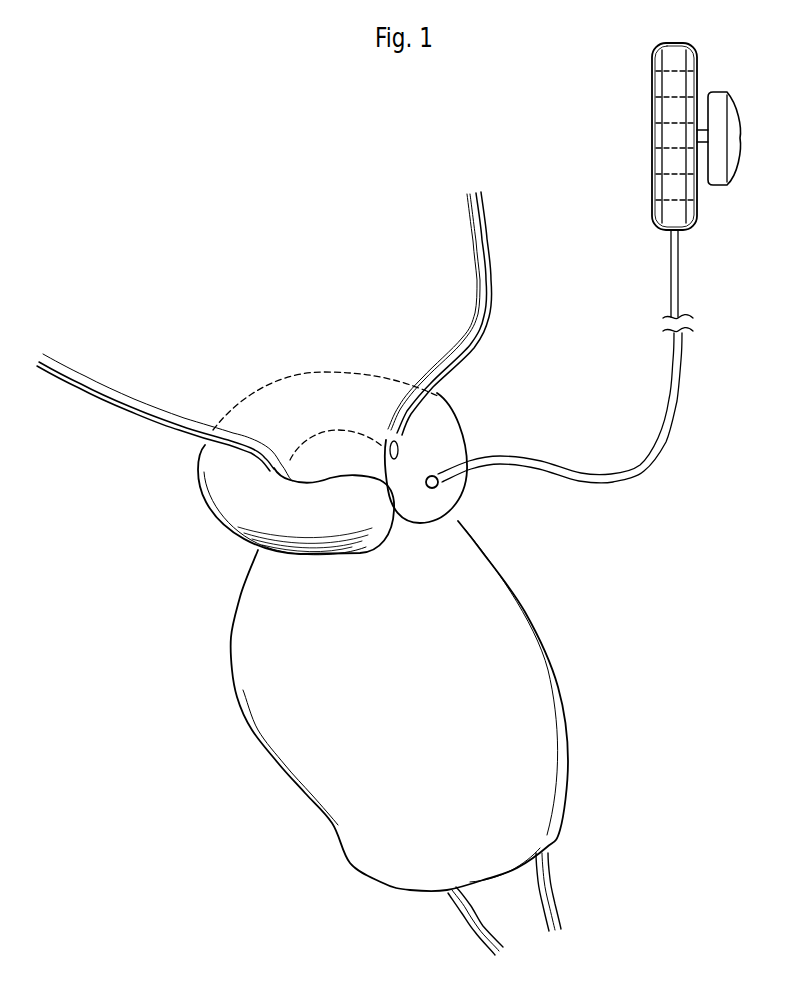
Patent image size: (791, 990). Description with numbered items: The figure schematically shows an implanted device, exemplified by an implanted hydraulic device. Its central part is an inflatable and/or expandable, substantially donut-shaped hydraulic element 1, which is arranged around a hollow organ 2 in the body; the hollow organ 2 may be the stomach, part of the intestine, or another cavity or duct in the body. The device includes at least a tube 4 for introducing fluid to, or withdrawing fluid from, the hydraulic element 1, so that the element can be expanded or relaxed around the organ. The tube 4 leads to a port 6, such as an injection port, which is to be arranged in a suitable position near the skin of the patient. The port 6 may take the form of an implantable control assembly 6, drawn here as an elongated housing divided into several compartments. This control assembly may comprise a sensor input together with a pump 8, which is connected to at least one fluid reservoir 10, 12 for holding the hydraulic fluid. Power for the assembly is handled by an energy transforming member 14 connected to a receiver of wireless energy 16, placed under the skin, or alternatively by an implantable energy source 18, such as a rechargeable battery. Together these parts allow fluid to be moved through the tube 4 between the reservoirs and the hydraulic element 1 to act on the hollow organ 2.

The hydraulic element 1 is at (220, 482).
The hollow organ 2 is at (491, 632).
The tube 4 is at (668, 438).
The port 6 is at (692, 58).
The pump 8 is at (672, 90).
The fluid reservoir 10 is at (665, 112).
The fluid reservoir 12 is at (660, 139).
The energy transforming member 14 is at (666, 165).
The receiver of wireless energy 16 is at (670, 187).
The implantable energy source 18 is at (670, 213).